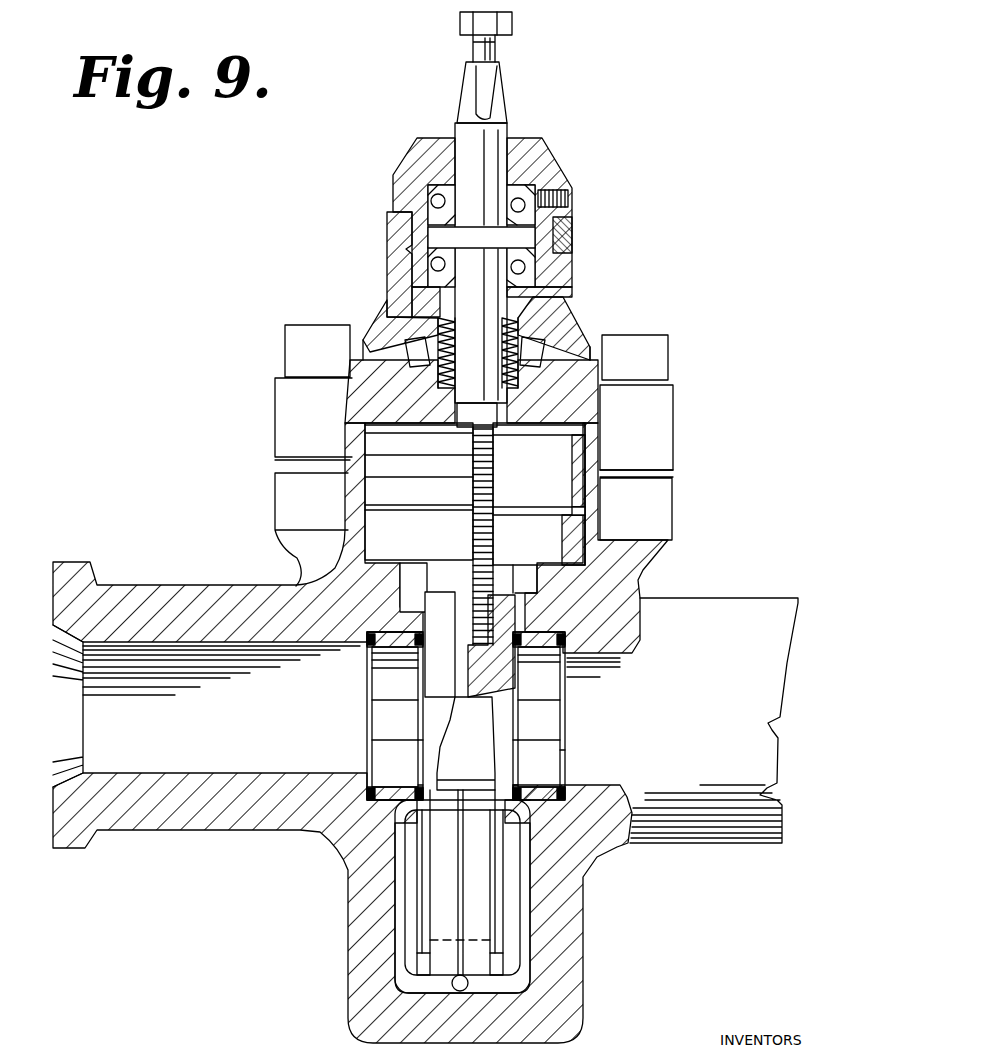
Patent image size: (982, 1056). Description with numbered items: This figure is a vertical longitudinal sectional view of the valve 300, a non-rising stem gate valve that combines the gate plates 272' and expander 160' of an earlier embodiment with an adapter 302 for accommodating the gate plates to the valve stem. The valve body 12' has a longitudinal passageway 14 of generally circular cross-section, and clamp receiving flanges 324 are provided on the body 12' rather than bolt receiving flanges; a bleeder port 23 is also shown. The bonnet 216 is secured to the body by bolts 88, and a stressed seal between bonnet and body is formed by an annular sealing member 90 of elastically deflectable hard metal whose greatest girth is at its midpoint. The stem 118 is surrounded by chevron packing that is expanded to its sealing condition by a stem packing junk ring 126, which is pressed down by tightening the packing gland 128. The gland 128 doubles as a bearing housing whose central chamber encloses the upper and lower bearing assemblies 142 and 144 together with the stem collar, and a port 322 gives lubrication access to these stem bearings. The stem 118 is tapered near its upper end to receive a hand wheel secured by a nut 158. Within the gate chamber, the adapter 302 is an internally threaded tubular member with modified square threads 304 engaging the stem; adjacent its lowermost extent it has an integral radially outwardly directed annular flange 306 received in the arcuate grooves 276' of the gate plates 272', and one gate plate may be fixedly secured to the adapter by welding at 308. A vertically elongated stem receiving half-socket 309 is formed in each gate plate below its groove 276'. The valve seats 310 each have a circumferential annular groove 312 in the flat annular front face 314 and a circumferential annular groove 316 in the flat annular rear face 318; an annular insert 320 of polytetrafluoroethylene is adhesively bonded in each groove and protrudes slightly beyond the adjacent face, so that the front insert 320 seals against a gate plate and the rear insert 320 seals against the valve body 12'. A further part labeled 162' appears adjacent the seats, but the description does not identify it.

The valve 300 is at (245, 515).
The valve body 12' is at (360, 691).
The clamp receiving flanges 324 is at (85, 850).
The longitudinal passageway 14 is at (248, 738).
The bonnet 216 is at (665, 431).
The bolts 88 is at (663, 366).
The nut 158 is at (512, 24).
The stem 118 is at (508, 134).
The packing gland 128 is at (555, 164).
The upper bearing assembly 142 is at (430, 193).
The port 322 is at (572, 236).
The lower bearing assembly 144 is at (410, 272).
The stem packing junk ring 126 is at (543, 295).
The adapter 302 is at (487, 580).
The modified square threads 304 is at (505, 572).
The annular sealing member 90 is at (585, 458).
The seat sleeve 162' is at (619, 494).
The annular flange 306 is at (556, 614).
The stem receiving half-socket 309 is at (560, 595).
The welding 308 is at (497, 604).
The arcuate grooves 276' is at (418, 587).
The expander 160' is at (439, 783).
The valve seats 310 is at (372, 702).
The annular insert 320 is at (372, 656).
The gate plates 272' is at (466, 710).
The flat annular front face 314 is at (424, 742).
The circumferential annular groove 312 is at (421, 786).
The flat annular rear face 318 is at (566, 751).
The circumferential annular groove 316 is at (562, 790).
The bleeder port 23 is at (452, 984).